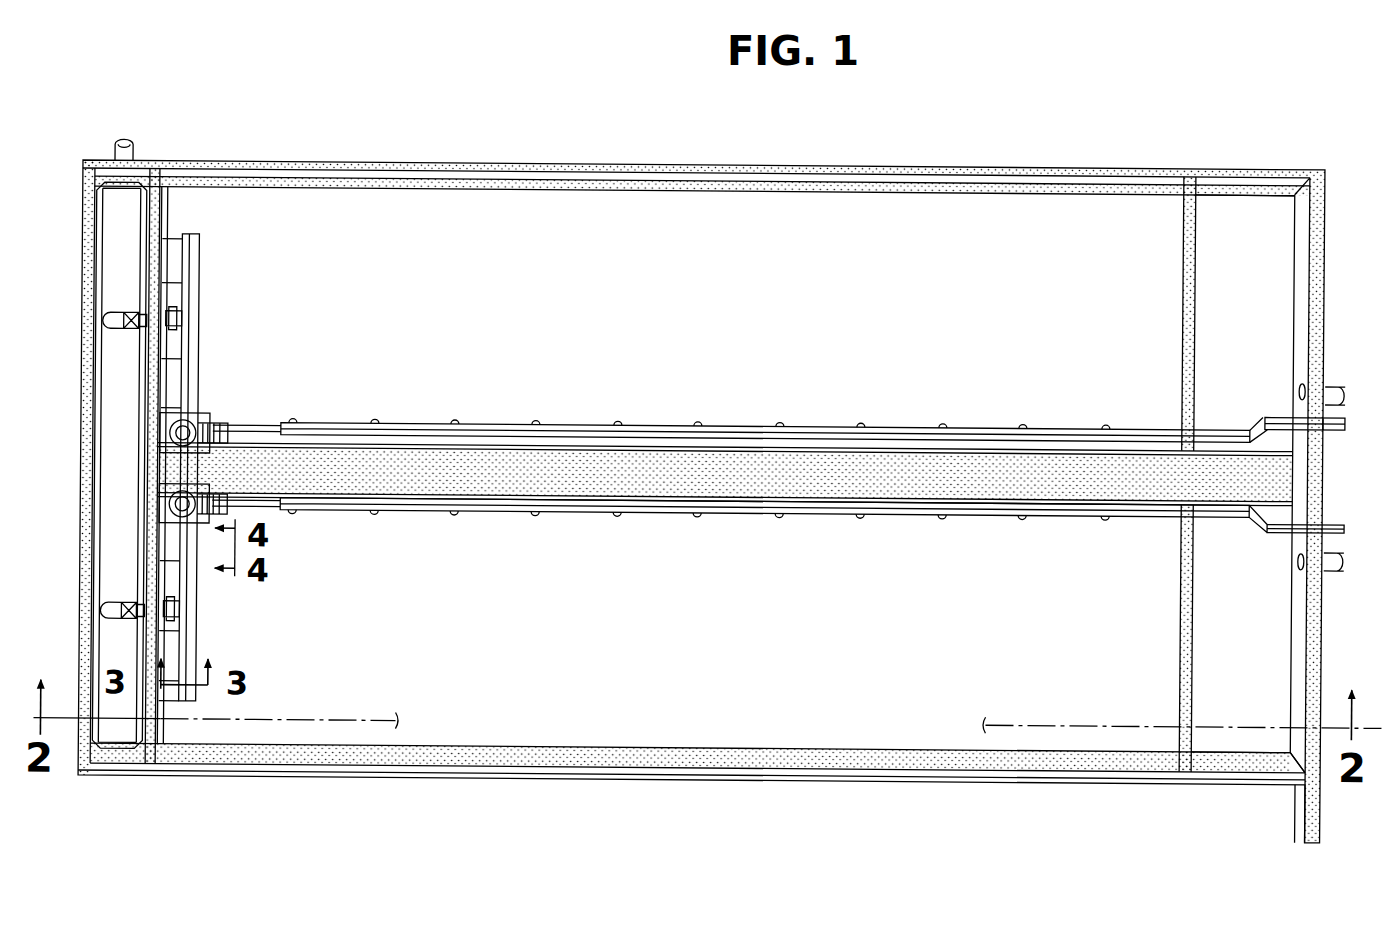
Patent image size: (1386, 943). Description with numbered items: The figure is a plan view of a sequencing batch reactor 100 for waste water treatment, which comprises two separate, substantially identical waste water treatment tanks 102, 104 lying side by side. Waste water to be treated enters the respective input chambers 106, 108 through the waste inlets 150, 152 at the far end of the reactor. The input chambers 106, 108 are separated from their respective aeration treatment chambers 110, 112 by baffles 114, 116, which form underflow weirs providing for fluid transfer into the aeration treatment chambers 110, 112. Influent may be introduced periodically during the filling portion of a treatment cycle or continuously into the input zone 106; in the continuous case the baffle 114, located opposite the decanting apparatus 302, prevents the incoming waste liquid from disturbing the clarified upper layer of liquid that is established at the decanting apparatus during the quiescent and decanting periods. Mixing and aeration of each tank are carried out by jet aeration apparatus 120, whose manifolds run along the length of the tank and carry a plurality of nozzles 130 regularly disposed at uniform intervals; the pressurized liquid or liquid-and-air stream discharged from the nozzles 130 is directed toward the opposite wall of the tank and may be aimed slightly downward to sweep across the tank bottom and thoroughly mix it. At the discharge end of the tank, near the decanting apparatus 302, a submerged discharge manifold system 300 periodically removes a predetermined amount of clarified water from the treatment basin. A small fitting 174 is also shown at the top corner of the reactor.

The sequencing batch reactor 100 is at (140, 133).
The waste water treatment tank 102 is at (733, 647).
The waste water treatment tank 104 is at (743, 299).
The input chamber 106 is at (1258, 623).
The input chamber 108 is at (1266, 277).
The aeration treatment chamber 110 is at (852, 616).
The aeration treatment chamber 112 is at (888, 246).
The baffle 114 is at (1184, 628).
The baffle 116 is at (1184, 228).
The jet aeration apparatus 120 is at (612, 530).
The nozzle 130 is at (296, 514).
The waste inlet 150 is at (1340, 548).
The waste inlet 152 is at (1338, 375).
The vent fitting 174 is at (136, 150).
The submerged discharge manifold system 300 is at (195, 640).
The decanting apparatus 302 is at (188, 592).